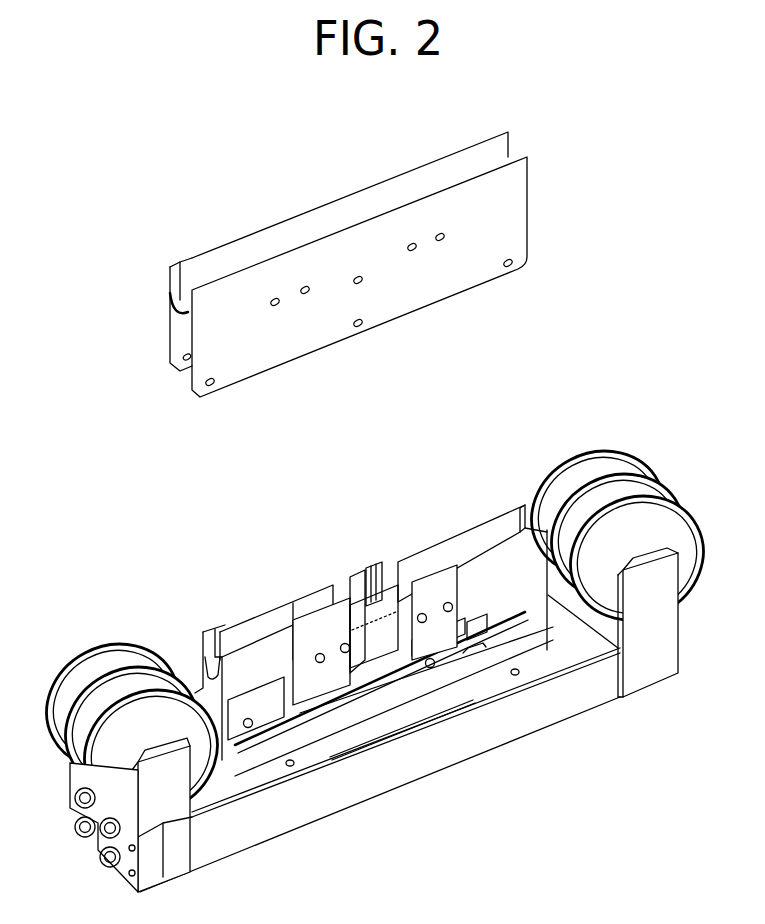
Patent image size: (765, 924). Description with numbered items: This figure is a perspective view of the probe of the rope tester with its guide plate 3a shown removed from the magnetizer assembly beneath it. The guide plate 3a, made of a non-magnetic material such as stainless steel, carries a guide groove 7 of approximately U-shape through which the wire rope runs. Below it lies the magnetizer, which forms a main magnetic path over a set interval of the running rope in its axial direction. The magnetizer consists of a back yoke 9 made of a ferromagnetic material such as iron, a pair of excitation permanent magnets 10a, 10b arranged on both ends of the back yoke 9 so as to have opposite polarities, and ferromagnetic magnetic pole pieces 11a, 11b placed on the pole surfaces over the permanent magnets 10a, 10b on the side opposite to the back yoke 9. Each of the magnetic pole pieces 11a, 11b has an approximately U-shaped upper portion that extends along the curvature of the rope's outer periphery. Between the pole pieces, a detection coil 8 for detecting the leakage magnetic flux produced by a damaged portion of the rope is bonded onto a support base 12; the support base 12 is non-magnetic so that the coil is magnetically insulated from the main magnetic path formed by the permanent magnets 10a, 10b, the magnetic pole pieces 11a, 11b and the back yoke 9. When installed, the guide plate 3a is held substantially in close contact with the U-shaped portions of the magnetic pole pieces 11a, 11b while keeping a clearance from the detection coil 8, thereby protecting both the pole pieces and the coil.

The guide plate 3a is at (498, 200).
The guide groove 7 is at (183, 293).
The detection coil 8 is at (357, 597).
The back yoke 9 is at (215, 627).
The permanent magnet 10a is at (290, 707).
The permanent magnet 10b is at (440, 612).
The magnetic pole piece 11a is at (333, 643).
The magnetic pole piece 11b is at (432, 598).
The support base 12 is at (368, 577).